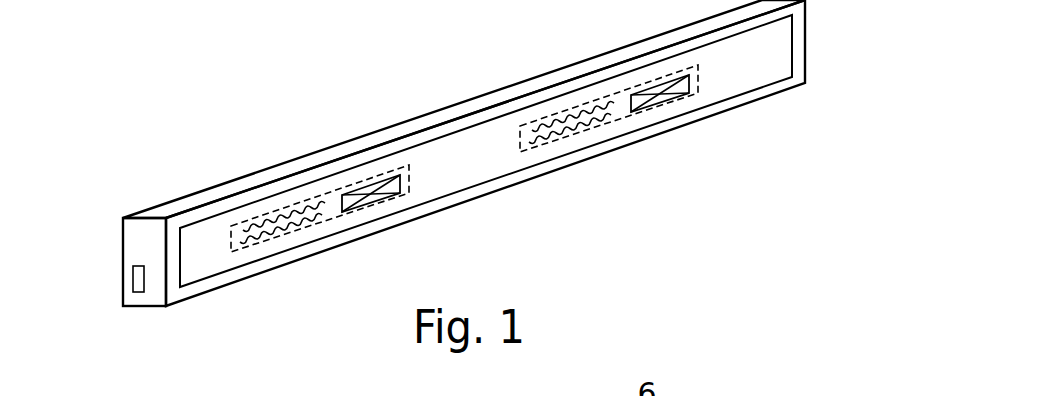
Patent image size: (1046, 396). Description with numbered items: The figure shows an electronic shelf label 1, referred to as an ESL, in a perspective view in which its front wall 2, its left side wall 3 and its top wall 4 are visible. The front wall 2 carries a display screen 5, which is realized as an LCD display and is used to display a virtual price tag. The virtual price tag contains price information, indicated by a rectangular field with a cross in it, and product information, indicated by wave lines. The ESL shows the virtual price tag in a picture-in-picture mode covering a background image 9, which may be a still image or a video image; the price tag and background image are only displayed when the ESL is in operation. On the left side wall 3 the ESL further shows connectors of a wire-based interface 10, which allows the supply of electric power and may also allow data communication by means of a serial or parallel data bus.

The electronic shelf label 1 is at (460, 197).
The front wall 2 is at (802, 65).
The left side wall 3 is at (137, 237).
The top wall 4 is at (197, 200).
The display screen 5 is at (178, 275).
The background image 9 is at (475, 162).
The wire-based interface 10 is at (137, 278).